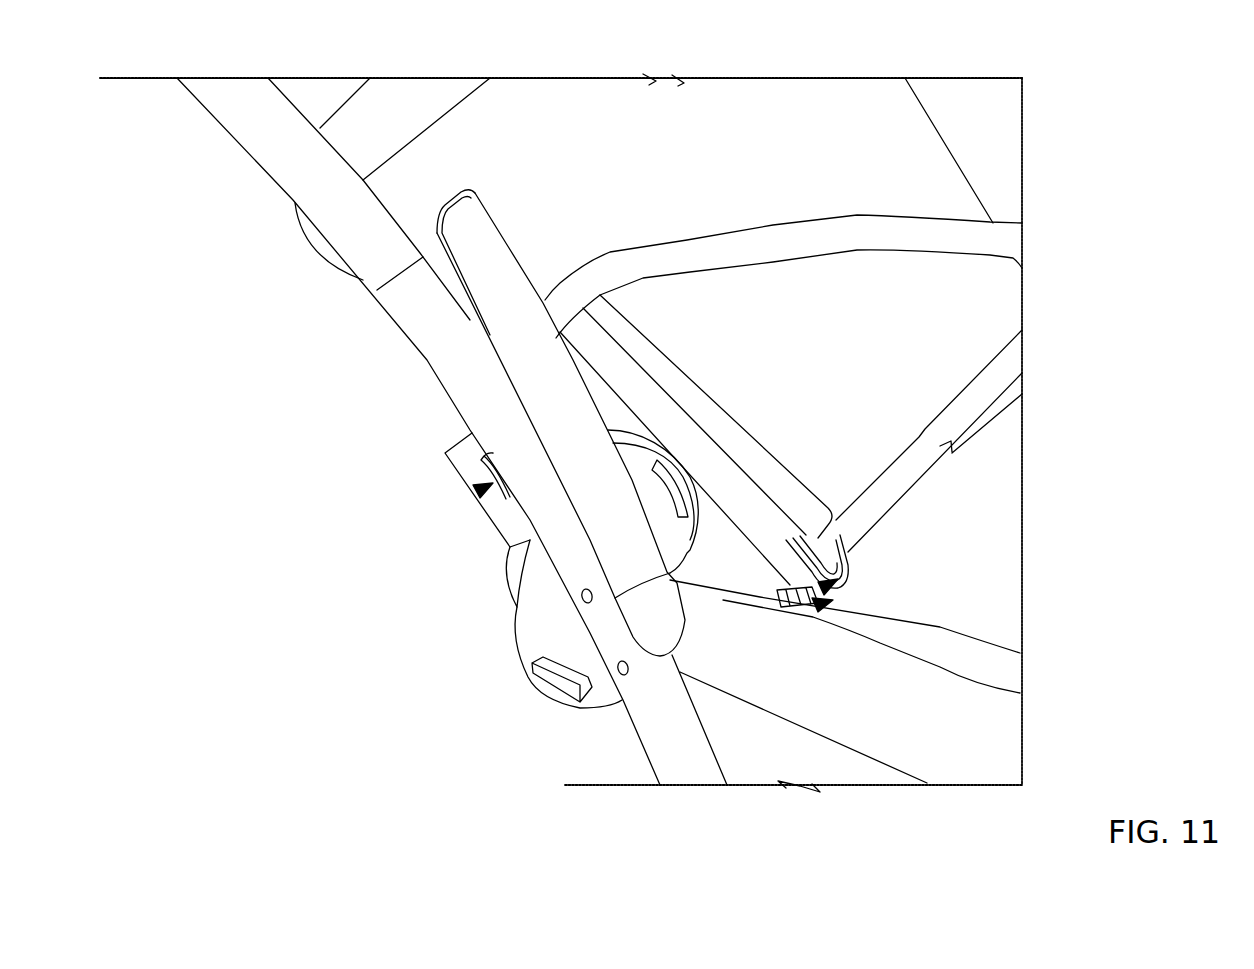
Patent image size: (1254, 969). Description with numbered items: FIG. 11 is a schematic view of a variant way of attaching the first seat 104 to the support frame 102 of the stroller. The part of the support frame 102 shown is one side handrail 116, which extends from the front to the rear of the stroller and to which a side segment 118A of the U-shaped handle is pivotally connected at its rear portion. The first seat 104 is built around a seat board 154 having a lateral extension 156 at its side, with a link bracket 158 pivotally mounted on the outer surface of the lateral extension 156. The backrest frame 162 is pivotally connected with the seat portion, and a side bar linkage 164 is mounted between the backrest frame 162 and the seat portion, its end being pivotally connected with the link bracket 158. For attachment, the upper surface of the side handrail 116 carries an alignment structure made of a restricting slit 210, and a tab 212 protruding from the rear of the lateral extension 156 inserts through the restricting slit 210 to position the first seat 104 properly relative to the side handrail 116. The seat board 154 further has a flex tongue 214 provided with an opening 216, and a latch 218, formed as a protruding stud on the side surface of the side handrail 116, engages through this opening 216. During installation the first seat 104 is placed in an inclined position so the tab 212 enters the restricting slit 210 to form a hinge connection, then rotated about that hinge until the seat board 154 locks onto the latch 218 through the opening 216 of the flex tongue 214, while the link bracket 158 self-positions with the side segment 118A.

The support frame 102 is at (848, 785).
The first seat 104 is at (557, 90).
The side handrail 116 is at (1010, 678).
The side segment 118A is at (457, 378).
The seat board 154 is at (708, 171).
The lateral extension 156 is at (740, 440).
The link bracket 158 is at (490, 313).
The backrest frame 162 is at (972, 397).
The side bar linkage 164 is at (882, 233).
The restricting slit 210 is at (838, 597).
The tab 212 is at (837, 540).
The flex tongue 214 is at (462, 467).
The opening 216 is at (473, 490).
The latch 218 is at (552, 692).